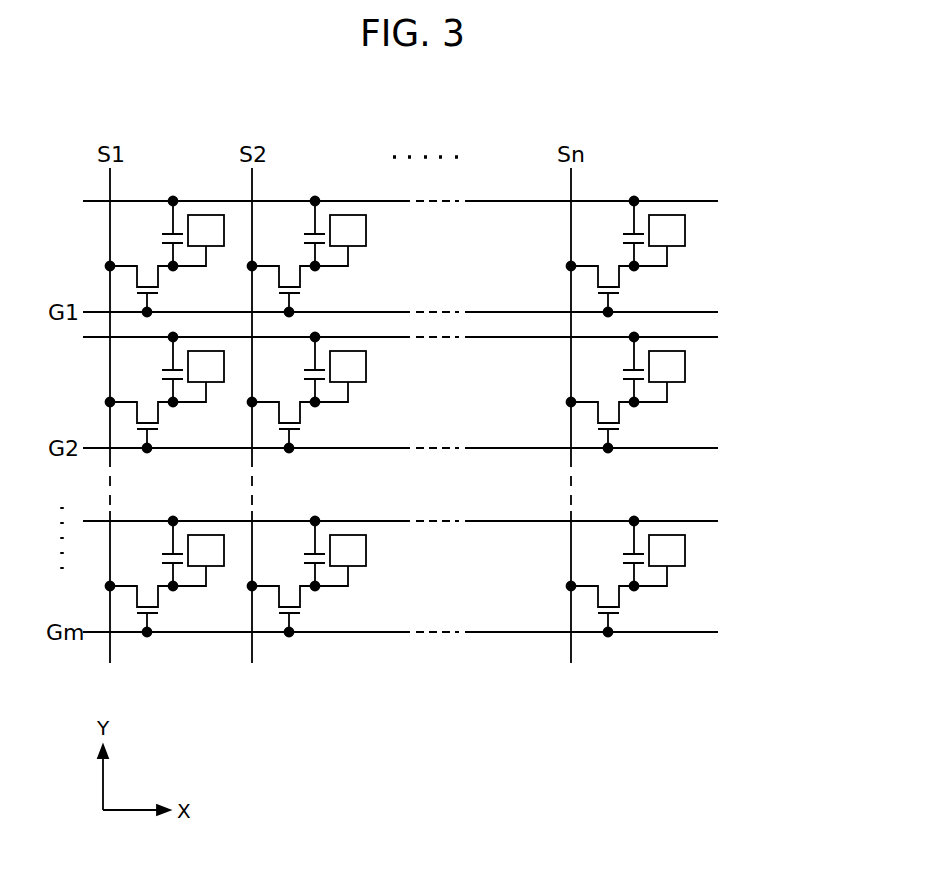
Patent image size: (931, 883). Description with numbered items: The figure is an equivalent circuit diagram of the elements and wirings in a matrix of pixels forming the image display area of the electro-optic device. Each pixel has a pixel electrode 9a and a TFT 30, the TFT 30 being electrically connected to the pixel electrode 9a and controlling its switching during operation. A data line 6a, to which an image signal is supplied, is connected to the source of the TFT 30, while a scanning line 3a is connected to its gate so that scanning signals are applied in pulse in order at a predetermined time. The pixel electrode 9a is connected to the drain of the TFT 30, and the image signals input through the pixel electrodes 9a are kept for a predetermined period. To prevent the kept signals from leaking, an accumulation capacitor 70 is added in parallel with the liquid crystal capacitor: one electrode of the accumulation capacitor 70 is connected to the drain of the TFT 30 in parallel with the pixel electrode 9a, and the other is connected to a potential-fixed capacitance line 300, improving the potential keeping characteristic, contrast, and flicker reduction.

The data line 6a is at (110, 182).
The capacitance line 300 is at (703, 203).
The scanning line 3a is at (705, 307).
The accumulation capacitor 70 is at (160, 239).
The pixel electrode 9a is at (680, 235).
The TFT 30 is at (128, 280).